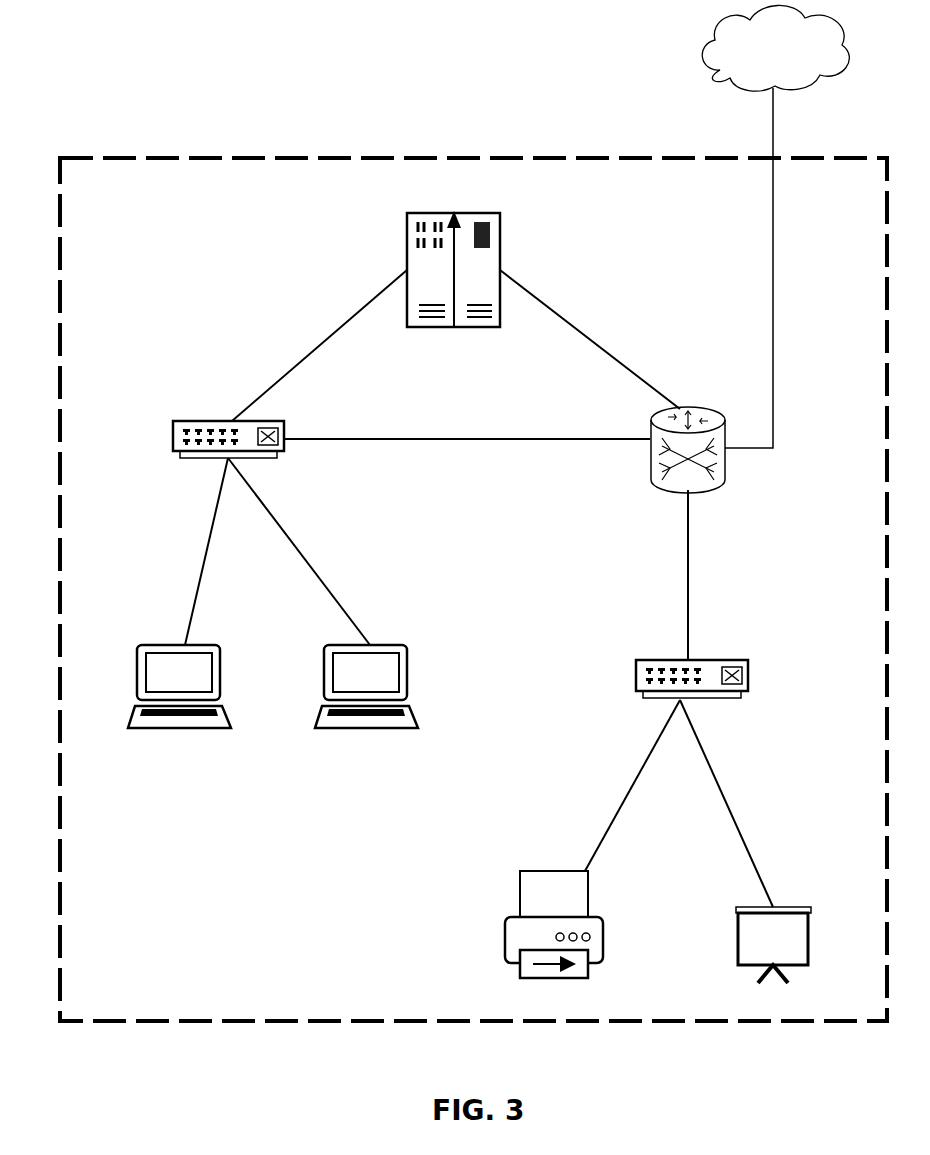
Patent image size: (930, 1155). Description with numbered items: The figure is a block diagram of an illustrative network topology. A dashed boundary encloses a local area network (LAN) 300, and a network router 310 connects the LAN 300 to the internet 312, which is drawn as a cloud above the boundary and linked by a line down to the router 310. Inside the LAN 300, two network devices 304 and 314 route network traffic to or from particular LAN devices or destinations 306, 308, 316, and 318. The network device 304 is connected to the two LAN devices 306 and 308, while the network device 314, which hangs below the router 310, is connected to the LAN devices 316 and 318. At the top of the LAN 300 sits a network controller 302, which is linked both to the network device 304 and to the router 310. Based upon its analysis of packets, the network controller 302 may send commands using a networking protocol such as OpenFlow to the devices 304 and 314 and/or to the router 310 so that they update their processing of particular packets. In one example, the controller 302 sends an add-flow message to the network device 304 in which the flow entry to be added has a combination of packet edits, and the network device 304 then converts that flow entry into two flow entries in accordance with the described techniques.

The local area network 300 is at (197, 157).
The network controller 302 is at (500, 225).
The network device 304 is at (173, 435).
The LAN device 306 is at (137, 653).
The LAN device 308 is at (408, 675).
The network router 310 is at (725, 480).
The internet 312 is at (775, 48).
The network device 314 is at (748, 672).
The LAN device 316 is at (505, 948).
The LAN device 318 is at (811, 908).